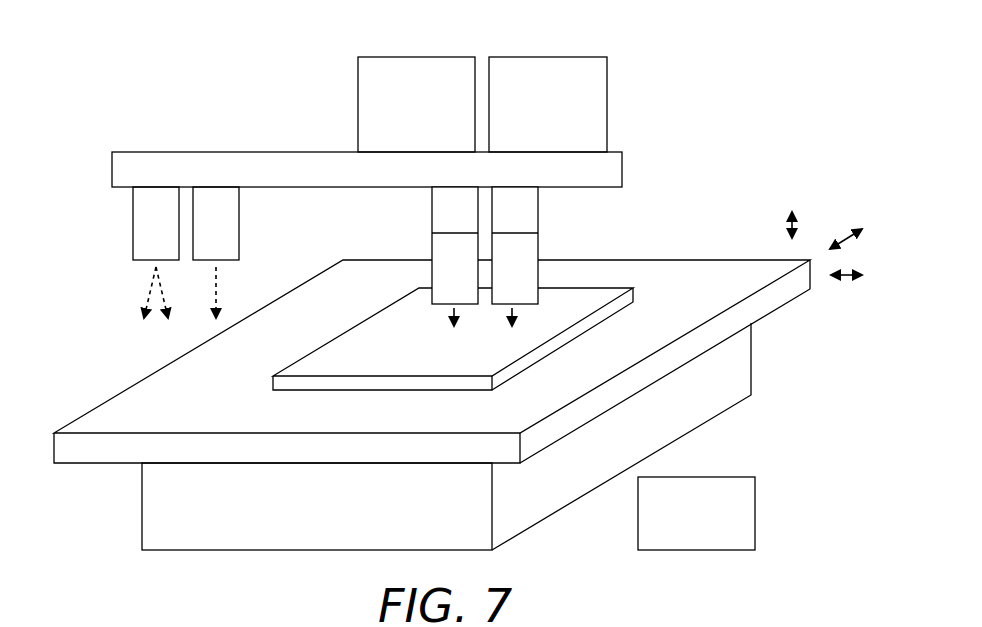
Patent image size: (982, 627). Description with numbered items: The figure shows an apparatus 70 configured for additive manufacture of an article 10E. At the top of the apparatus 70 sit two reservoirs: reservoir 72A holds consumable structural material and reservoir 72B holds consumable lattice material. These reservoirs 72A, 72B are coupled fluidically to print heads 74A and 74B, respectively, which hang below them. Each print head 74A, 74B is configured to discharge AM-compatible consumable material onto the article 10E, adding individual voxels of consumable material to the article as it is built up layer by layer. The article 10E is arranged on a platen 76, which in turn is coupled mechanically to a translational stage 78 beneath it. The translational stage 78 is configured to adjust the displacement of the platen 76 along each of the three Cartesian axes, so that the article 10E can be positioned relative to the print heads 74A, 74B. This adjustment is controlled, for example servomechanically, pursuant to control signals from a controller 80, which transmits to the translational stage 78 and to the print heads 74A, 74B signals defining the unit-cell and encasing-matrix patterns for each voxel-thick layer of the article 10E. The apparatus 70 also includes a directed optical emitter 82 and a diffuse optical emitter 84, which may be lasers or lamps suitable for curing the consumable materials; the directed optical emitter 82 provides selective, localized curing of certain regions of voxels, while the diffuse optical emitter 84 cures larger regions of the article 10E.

The apparatus 70 is at (812, 0).
The reservoir 72A is at (394, 114).
The reservoir 72B is at (526, 114).
The print head 74A is at (455, 256).
The print head 74B is at (515, 256).
The platen 76 is at (159, 412).
The translational stage 78 is at (301, 517).
The controller 80 is at (683, 525).
The directed optical emitter 82 is at (202, 233).
The diffuse optical emitter 84 is at (142, 233).
The article 10E is at (353, 355).